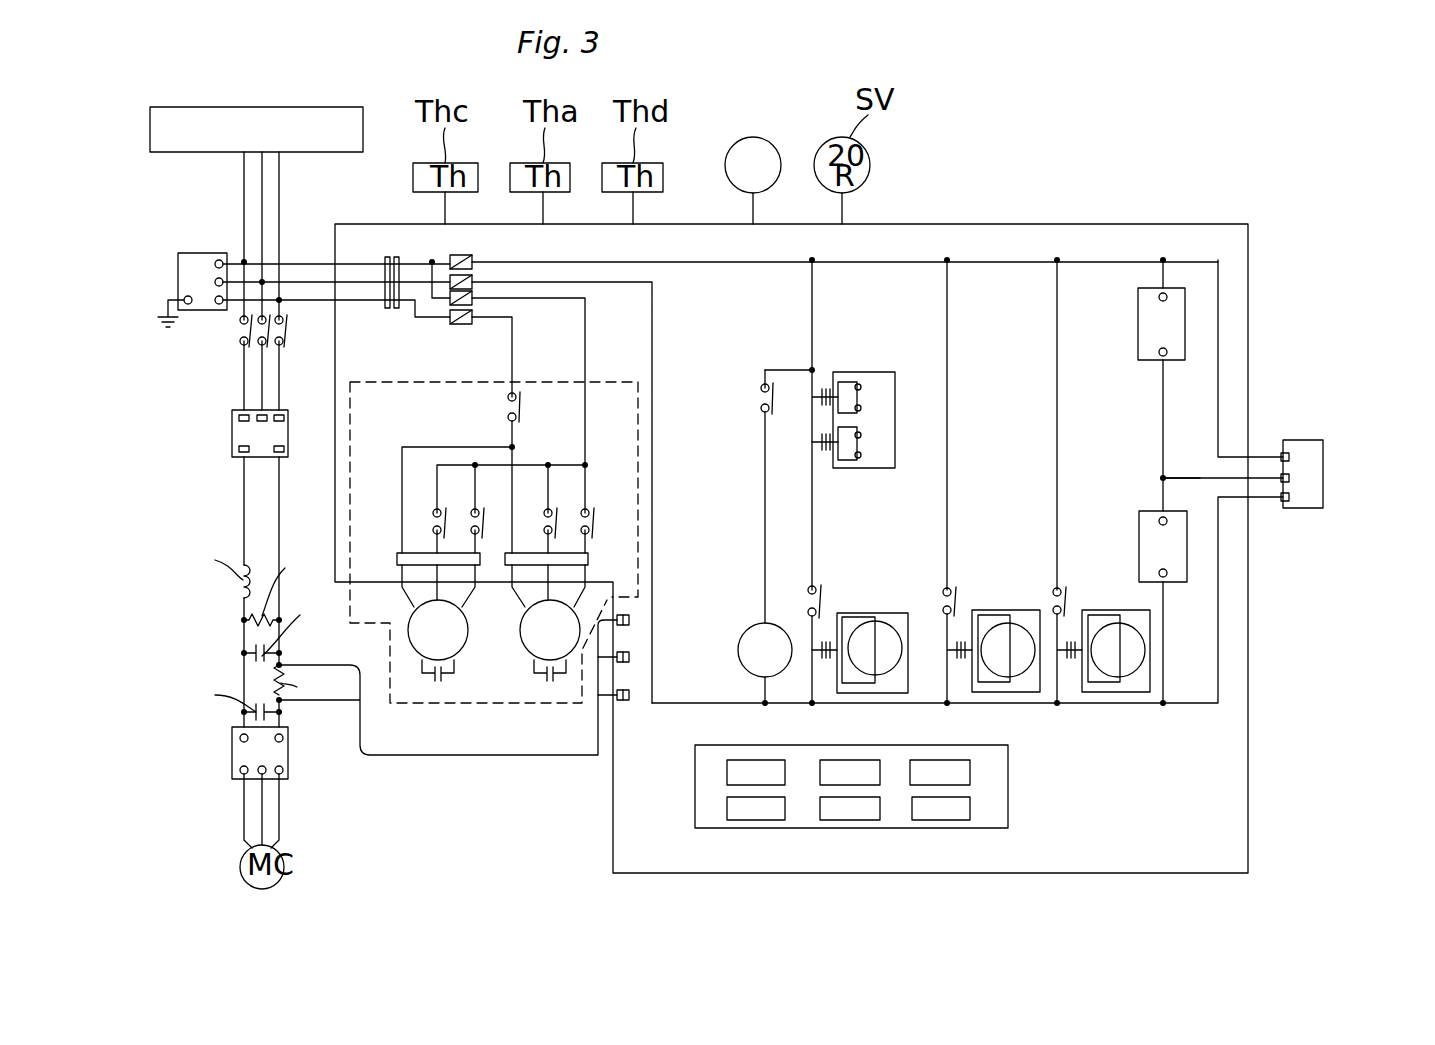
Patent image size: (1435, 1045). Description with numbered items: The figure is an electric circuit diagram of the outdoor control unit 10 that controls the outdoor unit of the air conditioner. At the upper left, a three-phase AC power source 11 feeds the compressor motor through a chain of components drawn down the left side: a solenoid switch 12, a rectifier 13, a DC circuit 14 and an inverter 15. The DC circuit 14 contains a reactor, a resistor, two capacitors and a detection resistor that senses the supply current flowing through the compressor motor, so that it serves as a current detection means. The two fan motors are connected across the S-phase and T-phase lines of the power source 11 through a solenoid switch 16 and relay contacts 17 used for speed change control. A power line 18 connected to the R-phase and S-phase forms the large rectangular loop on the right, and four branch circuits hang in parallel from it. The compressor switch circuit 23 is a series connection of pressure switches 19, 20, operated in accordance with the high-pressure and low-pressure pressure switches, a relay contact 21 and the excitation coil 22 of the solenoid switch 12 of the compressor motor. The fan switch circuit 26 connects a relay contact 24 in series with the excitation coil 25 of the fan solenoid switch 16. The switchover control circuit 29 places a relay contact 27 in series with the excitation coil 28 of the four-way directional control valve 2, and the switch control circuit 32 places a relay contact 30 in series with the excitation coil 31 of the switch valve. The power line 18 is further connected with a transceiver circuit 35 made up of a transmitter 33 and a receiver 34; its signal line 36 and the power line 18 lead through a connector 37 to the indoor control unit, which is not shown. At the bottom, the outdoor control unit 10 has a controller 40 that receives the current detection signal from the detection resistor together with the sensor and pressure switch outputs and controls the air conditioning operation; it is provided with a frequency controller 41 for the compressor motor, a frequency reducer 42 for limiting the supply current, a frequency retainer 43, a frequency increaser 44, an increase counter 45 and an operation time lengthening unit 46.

The four-way directional control valve 2 is at (752, 137).
The outdoor control unit 10 is at (1130, 188).
The three-phase AC power source 11 is at (185, 152).
The solenoid switch 12 is at (238, 323).
The rectifier 13 is at (232, 432).
The DC circuit 14 is at (240, 632).
The inverter 15 is at (232, 745).
The solenoid switch 16 is at (494, 542).
The relay contact 17 is at (433, 512).
The power line 18 is at (1005, 224).
The pressure switch 19 is at (870, 385).
The pressure switch 20 is at (858, 450).
The relay contact 21 is at (820, 597).
The excitation coil 22 is at (880, 612).
The compressor switch circuit 23 is at (815, 299).
The relay contact 24 is at (760, 400).
The excitation coil 25 is at (752, 628).
The fan switch circuit 26 is at (763, 513).
The relay contact 27 is at (956, 596).
The excitation coil 28 is at (1010, 610).
The switchover control circuit 29 is at (958, 436).
The relay contact 30 is at (1066, 596).
The excitation coil 31 is at (1105, 610).
The switch control circuit 32 is at (1064, 434).
The transmitter 33 is at (1187, 327).
The receiver 34 is at (1187, 545).
The transceiver circuit 35 is at (1161, 447).
The signal line 36 is at (1192, 478).
The connector 37 is at (1303, 440).
The controller 40 is at (863, 793).
The frequency controller 41 is at (727, 772).
The frequency reducer 42 is at (727, 808).
The frequency retainer 43 is at (845, 760).
The frequency increaser 44 is at (840, 820).
The increase counter 45 is at (970, 770).
The operation time lengthening unit 46 is at (970, 808).